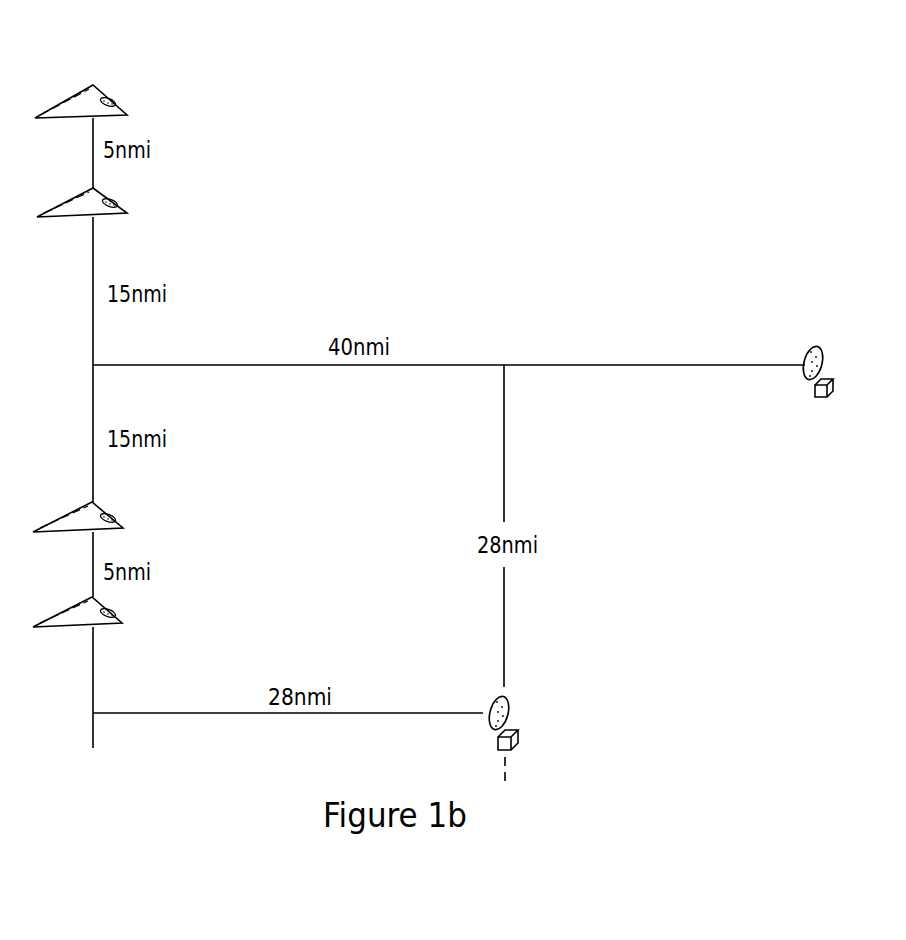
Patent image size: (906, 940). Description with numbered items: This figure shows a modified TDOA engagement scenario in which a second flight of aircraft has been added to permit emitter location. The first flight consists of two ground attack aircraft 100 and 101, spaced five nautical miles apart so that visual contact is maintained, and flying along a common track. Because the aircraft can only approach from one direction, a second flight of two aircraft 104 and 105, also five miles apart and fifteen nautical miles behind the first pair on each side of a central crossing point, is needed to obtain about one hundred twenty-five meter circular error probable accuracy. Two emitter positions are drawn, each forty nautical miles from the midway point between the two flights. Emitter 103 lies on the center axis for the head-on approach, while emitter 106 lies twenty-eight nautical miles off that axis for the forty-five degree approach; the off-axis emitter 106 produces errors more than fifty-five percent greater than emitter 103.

The ground attack aircraft 100 is at (117, 95).
The ground attack aircraft 101 is at (127, 203).
The emitter 103 is at (808, 350).
The aircraft 104 is at (130, 512).
The aircraft 105 is at (123, 624).
The emitter 106 is at (518, 743).